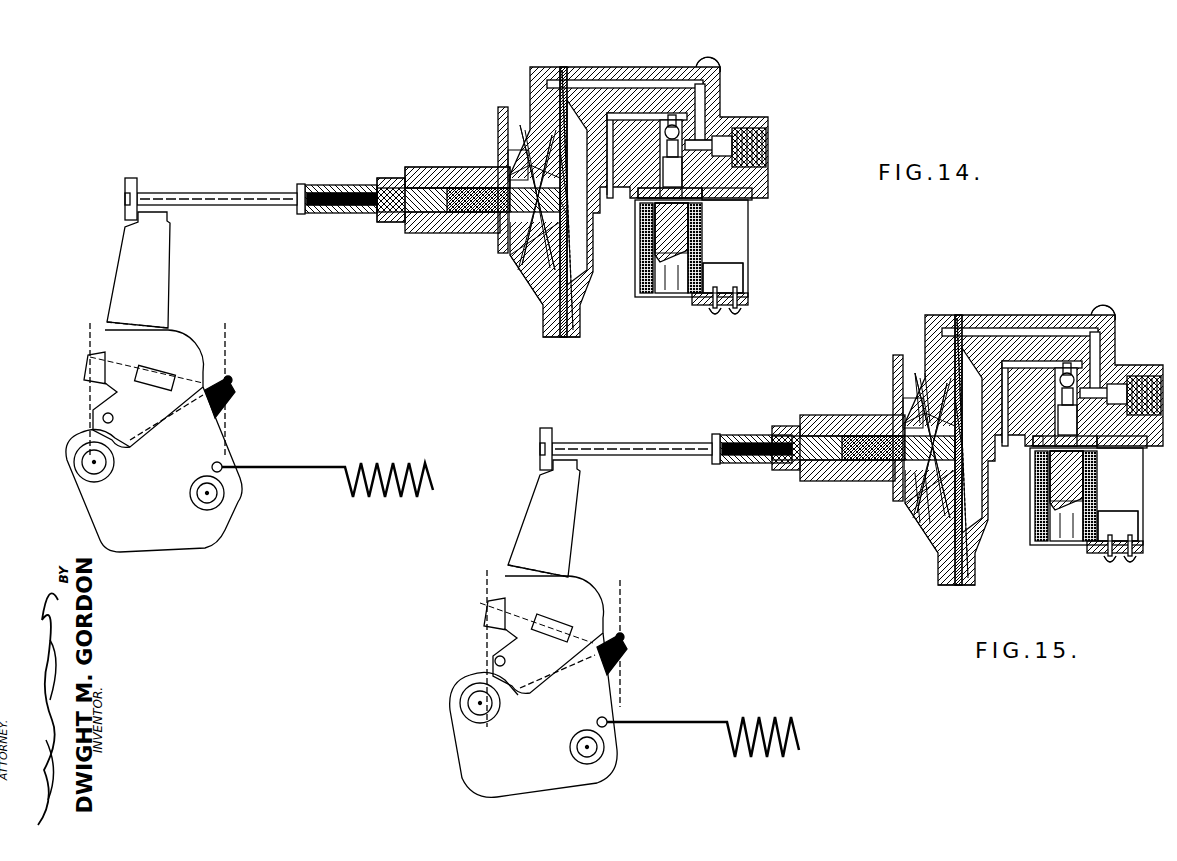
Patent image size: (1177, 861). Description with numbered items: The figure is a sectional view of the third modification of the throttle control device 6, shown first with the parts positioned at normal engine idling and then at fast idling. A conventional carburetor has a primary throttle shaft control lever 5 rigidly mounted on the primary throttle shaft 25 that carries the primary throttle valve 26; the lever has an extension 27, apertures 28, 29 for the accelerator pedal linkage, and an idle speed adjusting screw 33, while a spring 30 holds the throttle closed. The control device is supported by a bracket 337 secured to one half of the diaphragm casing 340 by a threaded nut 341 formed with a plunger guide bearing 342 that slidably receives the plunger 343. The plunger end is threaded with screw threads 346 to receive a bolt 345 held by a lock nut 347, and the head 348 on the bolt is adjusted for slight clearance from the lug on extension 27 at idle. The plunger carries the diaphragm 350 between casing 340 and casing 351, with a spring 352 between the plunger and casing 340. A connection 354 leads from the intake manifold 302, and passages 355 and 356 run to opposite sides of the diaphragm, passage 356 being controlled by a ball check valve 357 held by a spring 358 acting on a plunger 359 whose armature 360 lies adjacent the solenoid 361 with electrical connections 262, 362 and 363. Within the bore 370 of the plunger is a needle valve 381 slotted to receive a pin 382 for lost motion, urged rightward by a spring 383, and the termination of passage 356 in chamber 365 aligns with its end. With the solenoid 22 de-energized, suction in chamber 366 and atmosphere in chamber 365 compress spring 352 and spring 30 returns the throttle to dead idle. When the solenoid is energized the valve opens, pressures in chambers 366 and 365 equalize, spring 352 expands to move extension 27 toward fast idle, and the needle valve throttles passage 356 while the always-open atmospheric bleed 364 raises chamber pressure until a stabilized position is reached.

In FIG. 14, the primary throttle shaft control lever 5 is at (230, 512).
In FIG. 15, the primary throttle shaft control lever 5 is at (615, 752).
In FIG. 14, the throttle control device 6 is at (722, 72).
In FIG. 15, the throttle control device 6 is at (1120, 305).
In FIG. 14, the solenoid 22 is at (761, 240).
In FIG. 15, the solenoid 22 is at (1088, 499).
In FIG. 14, the primary throttle shaft 25 is at (155, 366).
In FIG. 15, the primary throttle shaft 25 is at (555, 617).
In FIG. 14, the primary throttle valve 26 is at (125, 357).
In FIG. 15, the primary throttle valve 26 is at (525, 596).
In FIG. 14, the extension 27 is at (167, 258).
In FIG. 15, the extension 27 is at (578, 495).
In FIG. 14, the aperture 28 is at (230, 498).
In FIG. 15, the aperture 28 is at (587, 747).
In FIG. 14, the aperture 29 is at (88, 466).
In FIG. 15, the aperture 29 is at (480, 703).
In FIG. 14, the spring 30 is at (395, 465).
In FIG. 15, the spring 30 is at (778, 722).
In FIG. 14, the idle speed adjusting screw 33 is at (236, 384).
In FIG. 15, the idle speed adjusting screw 33 is at (628, 640).
In FIG. 14, the electrical connection 262 is at (712, 312).
In FIG. 14, the intake manifold 302 is at (567, 205).
In FIG. 14, the bracket 337 is at (500, 110).
In FIG. 15, the bracket 337 is at (872, 425).
In FIG. 14, the diaphragm casing 340 is at (543, 336).
In FIG. 15, the diaphragm casing 340 is at (938, 597).
In FIG. 14, the threaded nut 341 is at (435, 233).
In FIG. 15, the threaded nut 341 is at (863, 470).
In FIG. 14, the plunger guide bearing 342 is at (405, 222).
In FIG. 14, the plunger 343 is at (332, 214).
In FIG. 15, the plunger 343 is at (756, 466).
In FIG. 14, the bolt 345 is at (218, 206).
In FIG. 15, the bolt 345 is at (632, 449).
In FIG. 14, the screw threads 346 is at (345, 192).
In FIG. 14, the lock nut 347 is at (300, 214).
In FIG. 15, the lock nut 347 is at (716, 449).
In FIG. 14, the head 348 is at (135, 178).
In FIG. 15, the head 348 is at (568, 437).
In FIG. 14, the diaphragm 350 is at (545, 292).
In FIG. 15, the diaphragm 350 is at (916, 534).
In FIG. 14, the diaphragm casing 351 is at (578, 335).
In FIG. 15, the diaphragm casing 351 is at (982, 460).
In FIG. 14, the spring 352 is at (525, 165).
In FIG. 15, the spring 352 is at (892, 404).
In FIG. 14, the connection 354 is at (768, 143).
In FIG. 15, the connection 354 is at (1144, 395).
In FIG. 14, the passage 355 is at (640, 85).
In FIG. 15, the passage 355 is at (1034, 438).
In FIG. 14, the passage 356 is at (700, 112).
In FIG. 15, the passage 356 is at (1105, 386).
In FIG. 14, the ball check valve 357 is at (670, 112).
In FIG. 15, the ball check valve 357 is at (1039, 367).
In FIG. 14, the spring 358 is at (690, 226).
In FIG. 15, the spring 358 is at (1096, 476).
In FIG. 14, the plunger 359 is at (760, 175).
In FIG. 14, the armature 360 is at (706, 200).
In FIG. 15, the armature 360 is at (1087, 452).
In FIG. 14, the solenoid 361 is at (704, 255).
In FIG. 15, the solenoid 361 is at (1120, 512).
In FIG. 15, the electrical connection 362 is at (1094, 575).
In FIG. 14, the electrical connection 363 is at (736, 315).
In FIG. 15, the electrical connection 363 is at (1140, 575).
In FIG. 14, the atmospheric bleed 364 is at (595, 290).
In FIG. 15, the atmospheric bleed 364 is at (996, 448).
In FIG. 14, the chamber 365 is at (562, 130).
In FIG. 15, the chamber 365 is at (973, 420).
In FIG. 14, the chamber 366 is at (533, 262).
In FIG. 15, the chamber 366 is at (908, 456).
In FIG. 14, the bore 370 is at (433, 170).
In FIG. 14, the needle valve 381 is at (568, 180).
In FIG. 15, the needle valve 381 is at (993, 446).
In FIG. 15, the pin 382 is at (936, 447).
In FIG. 14, the spring 383 is at (488, 185).
In FIG. 15, the spring 383 is at (865, 448).